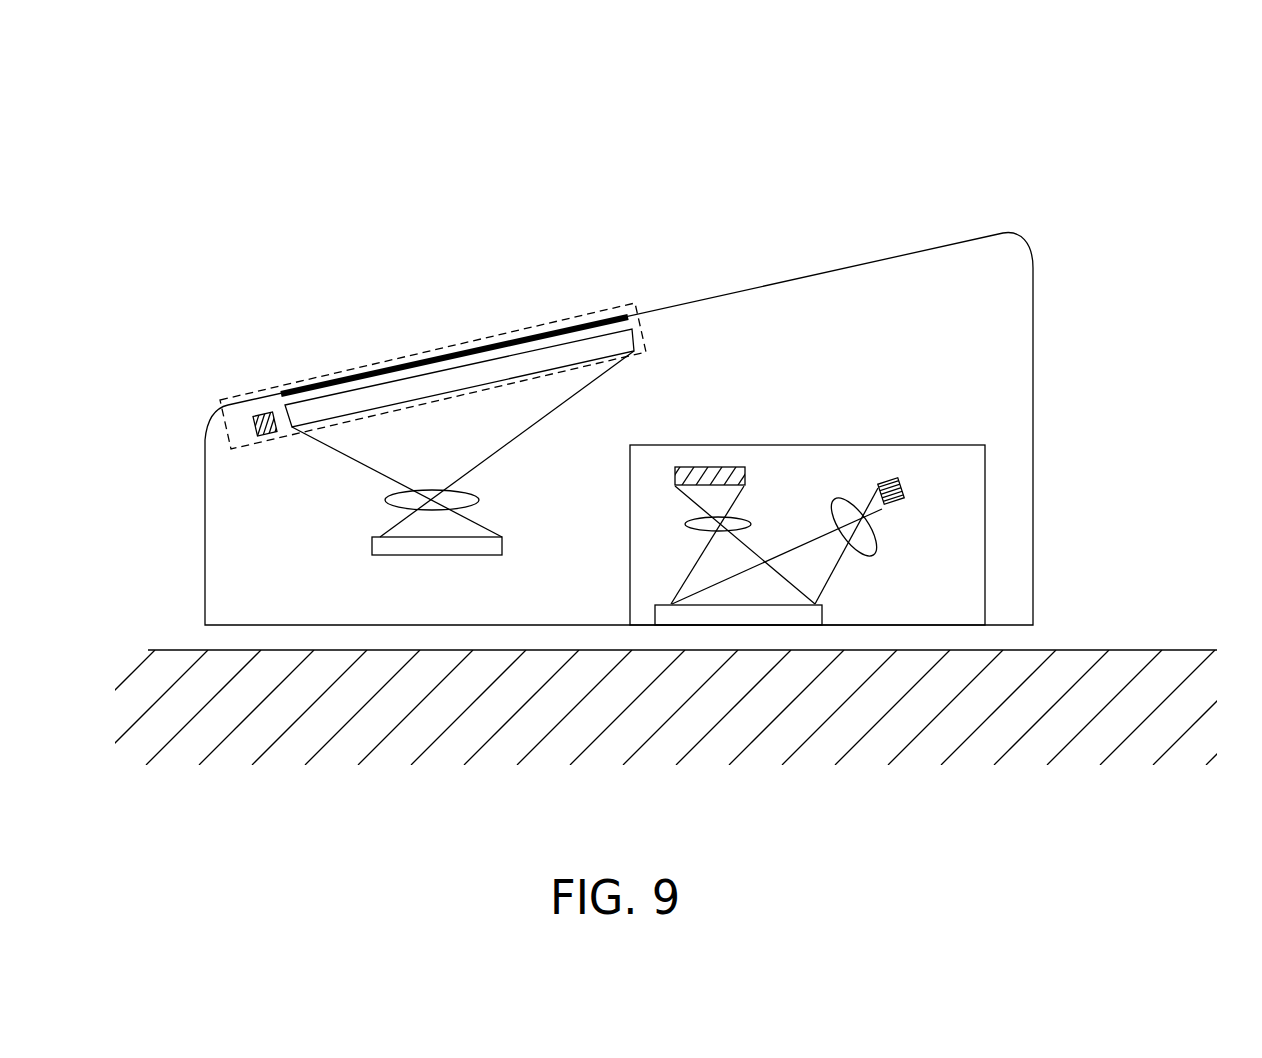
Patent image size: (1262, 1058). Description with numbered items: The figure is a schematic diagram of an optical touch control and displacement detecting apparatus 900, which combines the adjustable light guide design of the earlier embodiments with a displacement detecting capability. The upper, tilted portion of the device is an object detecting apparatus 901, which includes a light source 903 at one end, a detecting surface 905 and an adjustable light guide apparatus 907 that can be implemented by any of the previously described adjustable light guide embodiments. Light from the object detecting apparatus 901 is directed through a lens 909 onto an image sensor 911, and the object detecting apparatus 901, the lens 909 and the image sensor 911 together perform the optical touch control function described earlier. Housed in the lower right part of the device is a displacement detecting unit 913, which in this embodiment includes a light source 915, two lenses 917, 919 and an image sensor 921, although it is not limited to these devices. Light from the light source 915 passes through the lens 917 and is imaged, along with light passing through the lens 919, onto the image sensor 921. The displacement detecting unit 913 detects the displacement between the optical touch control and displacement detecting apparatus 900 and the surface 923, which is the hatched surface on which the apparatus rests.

The optical touch control and displacement detecting apparatus 900 is at (1088, 165).
The object detecting apparatus 901 is at (420, 352).
The light source 903 is at (254, 423).
The detecting surface 905 is at (327, 383).
The adjustable light guide apparatus 907 is at (563, 357).
The lens 909 is at (385, 500).
The image sensor 911 is at (372, 547).
The displacement detecting unit 913 is at (807, 445).
The light source 915 is at (903, 479).
The lens 917 is at (872, 554).
The lens 919 is at (688, 525).
The image sensor 921 is at (708, 467).
The surface 923 is at (1141, 650).